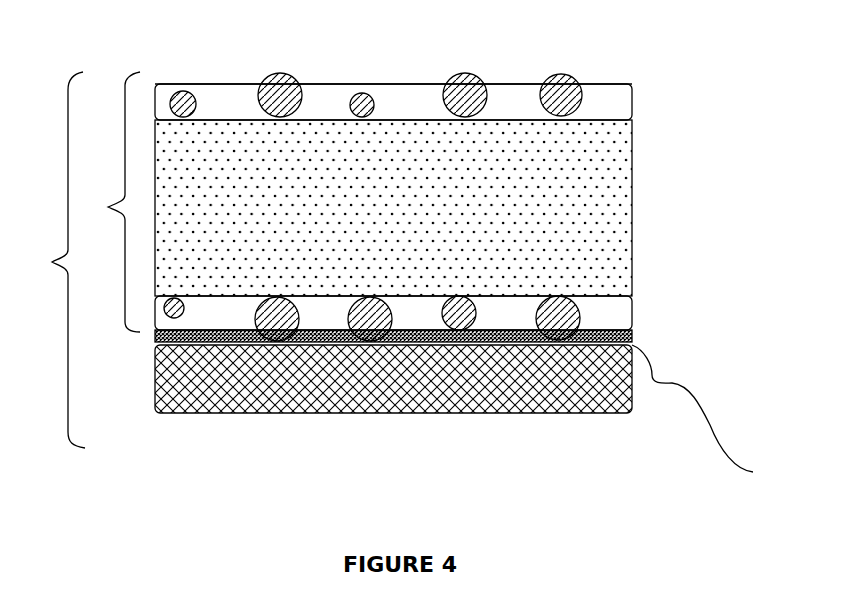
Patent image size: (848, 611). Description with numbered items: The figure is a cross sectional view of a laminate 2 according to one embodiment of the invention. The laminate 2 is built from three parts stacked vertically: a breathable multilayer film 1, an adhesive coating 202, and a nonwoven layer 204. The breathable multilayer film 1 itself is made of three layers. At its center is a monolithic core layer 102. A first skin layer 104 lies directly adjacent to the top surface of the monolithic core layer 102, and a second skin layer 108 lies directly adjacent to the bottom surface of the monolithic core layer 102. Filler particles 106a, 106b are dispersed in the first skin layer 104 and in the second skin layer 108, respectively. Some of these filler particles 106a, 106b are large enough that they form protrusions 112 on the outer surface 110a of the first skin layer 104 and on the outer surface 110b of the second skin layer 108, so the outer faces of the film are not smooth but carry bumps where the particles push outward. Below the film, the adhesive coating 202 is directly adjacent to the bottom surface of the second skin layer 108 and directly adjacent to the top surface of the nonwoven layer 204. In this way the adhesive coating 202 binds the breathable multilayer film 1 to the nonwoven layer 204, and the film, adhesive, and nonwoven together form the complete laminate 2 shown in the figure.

The breathable multilayer film 1 is at (115, 202).
The laminate 2 is at (57, 260).
The monolithic core layer 102 is at (630, 188).
The first skin layer 104 is at (243, 95).
The filler particles 106a is at (581, 89).
The filler particles 106b is at (565, 314).
The second skin layer 108 is at (157, 310).
The outer surface of the first skin layer 110a is at (327, 84).
The outer surface of the second skin layer 110b is at (632, 332).
The protrusions 112 is at (457, 73).
The adhesive coating 202 is at (705, 411).
The nonwoven layer 204 is at (253, 413).